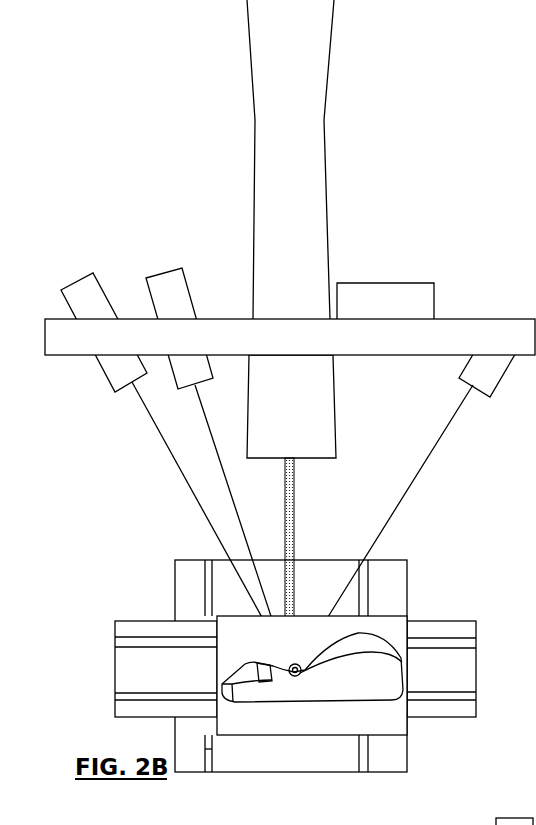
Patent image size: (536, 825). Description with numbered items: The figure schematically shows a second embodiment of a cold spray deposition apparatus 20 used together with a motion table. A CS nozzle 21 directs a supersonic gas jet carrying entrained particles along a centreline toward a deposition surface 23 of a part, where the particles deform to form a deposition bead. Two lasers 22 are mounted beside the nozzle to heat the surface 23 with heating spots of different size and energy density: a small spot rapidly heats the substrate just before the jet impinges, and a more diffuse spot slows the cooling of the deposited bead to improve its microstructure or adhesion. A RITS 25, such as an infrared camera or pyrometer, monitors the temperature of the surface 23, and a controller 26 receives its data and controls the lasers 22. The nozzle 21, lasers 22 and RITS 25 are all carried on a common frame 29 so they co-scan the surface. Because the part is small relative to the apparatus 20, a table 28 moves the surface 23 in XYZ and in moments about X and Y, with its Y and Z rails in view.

The CS deposition apparatus 20 is at (104, 230).
The CS nozzle 21 is at (298, 288).
The laser 22 is at (98, 309).
The deposition surface 23 is at (270, 660).
The RITS 25 is at (495, 383).
The controller 26 is at (400, 310).
The table 28 is at (350, 730).
The common frame 29 is at (185, 349).